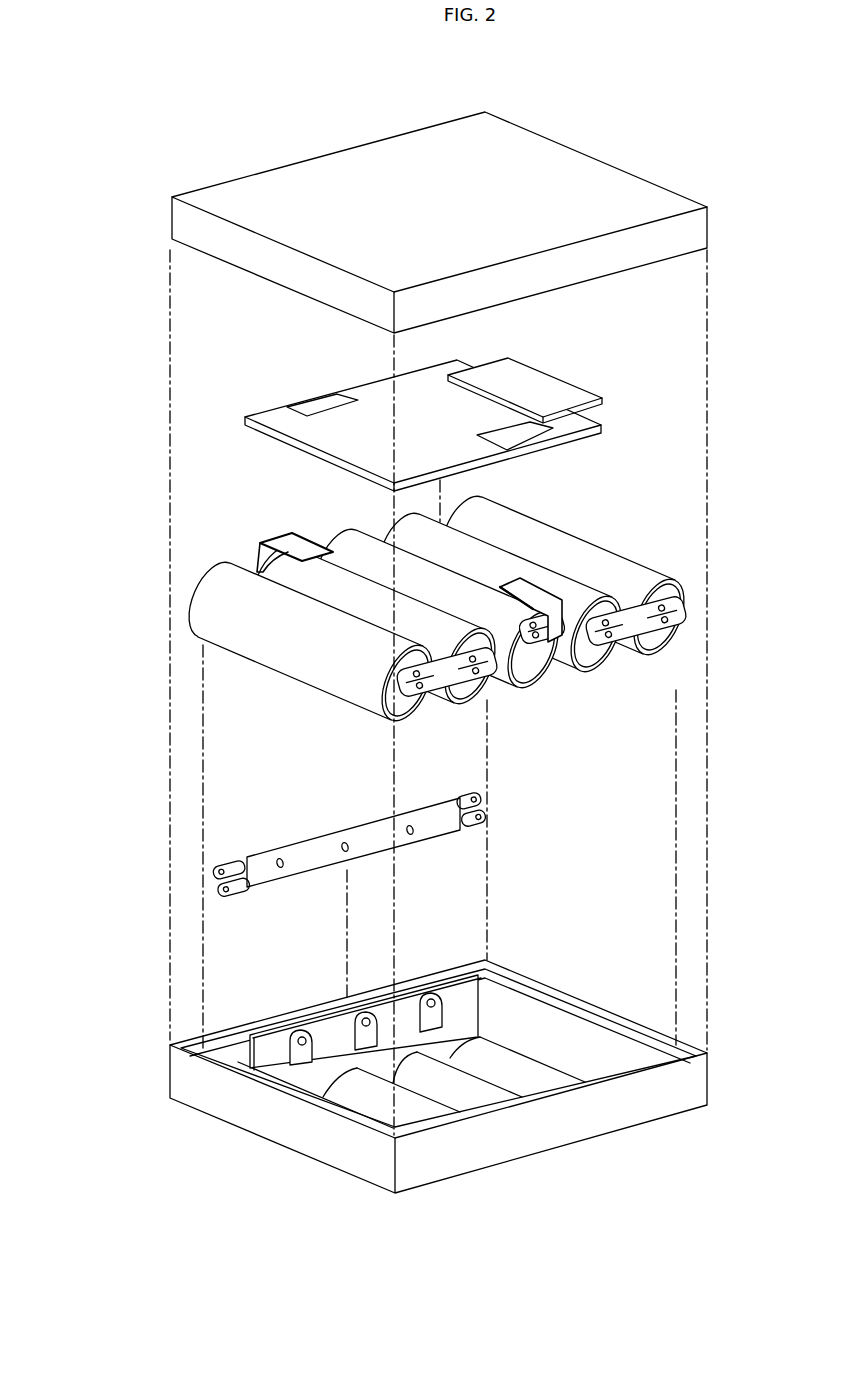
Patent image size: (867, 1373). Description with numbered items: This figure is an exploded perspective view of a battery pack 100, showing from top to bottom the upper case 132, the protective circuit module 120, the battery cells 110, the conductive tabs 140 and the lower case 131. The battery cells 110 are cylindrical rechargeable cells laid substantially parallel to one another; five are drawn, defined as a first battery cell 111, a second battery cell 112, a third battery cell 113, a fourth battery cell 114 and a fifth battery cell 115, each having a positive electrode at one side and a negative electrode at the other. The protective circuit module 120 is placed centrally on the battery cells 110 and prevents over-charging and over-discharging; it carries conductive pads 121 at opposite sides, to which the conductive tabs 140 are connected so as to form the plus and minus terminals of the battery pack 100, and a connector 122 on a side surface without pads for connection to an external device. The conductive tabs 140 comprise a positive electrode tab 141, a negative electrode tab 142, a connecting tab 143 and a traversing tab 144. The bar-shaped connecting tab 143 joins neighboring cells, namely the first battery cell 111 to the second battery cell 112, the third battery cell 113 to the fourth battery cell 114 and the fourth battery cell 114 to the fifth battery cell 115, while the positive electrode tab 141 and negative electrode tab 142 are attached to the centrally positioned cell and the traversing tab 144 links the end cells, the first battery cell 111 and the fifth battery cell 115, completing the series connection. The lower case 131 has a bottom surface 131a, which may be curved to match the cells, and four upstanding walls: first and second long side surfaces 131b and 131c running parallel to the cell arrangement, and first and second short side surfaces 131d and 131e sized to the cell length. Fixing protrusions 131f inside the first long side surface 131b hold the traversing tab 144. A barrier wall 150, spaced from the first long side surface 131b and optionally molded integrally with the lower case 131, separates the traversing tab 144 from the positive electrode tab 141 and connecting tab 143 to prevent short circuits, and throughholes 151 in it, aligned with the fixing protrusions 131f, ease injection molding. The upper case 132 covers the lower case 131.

The battery pack 100 is at (176, 93).
The battery cells 110 is at (436, 660).
The first battery cell 111 is at (355, 668).
The second battery cell 112 is at (497, 700).
The third battery cell 113 is at (548, 688).
The fourth battery cell 114 is at (605, 680).
The fifth battery cell 115 is at (662, 690).
The protective circuit module 120 is at (431, 409).
The conductive pads 121 is at (308, 406).
The connector 122 is at (555, 392).
The lower case 131 is at (433, 1071).
The bottom surface 131a is at (365, 1102).
The first long side surface 131b is at (460, 970).
The second long side surface 131c is at (510, 1140).
The first short side surface 131d is at (270, 1118).
The second short side surface 131e is at (540, 1000).
The fixing protrusions 131f is at (380, 1015).
The upper case 132 is at (572, 168).
The conductive tabs 140 is at (356, 707).
The positive electrode tab 141 is at (278, 538).
The negative electrode tab 142 is at (500, 587).
The connecting tab 143 is at (488, 628).
The traversing tab 144 is at (288, 839).
The barrier wall 150 is at (362, 1011).
The throughholes 151 is at (293, 1047).